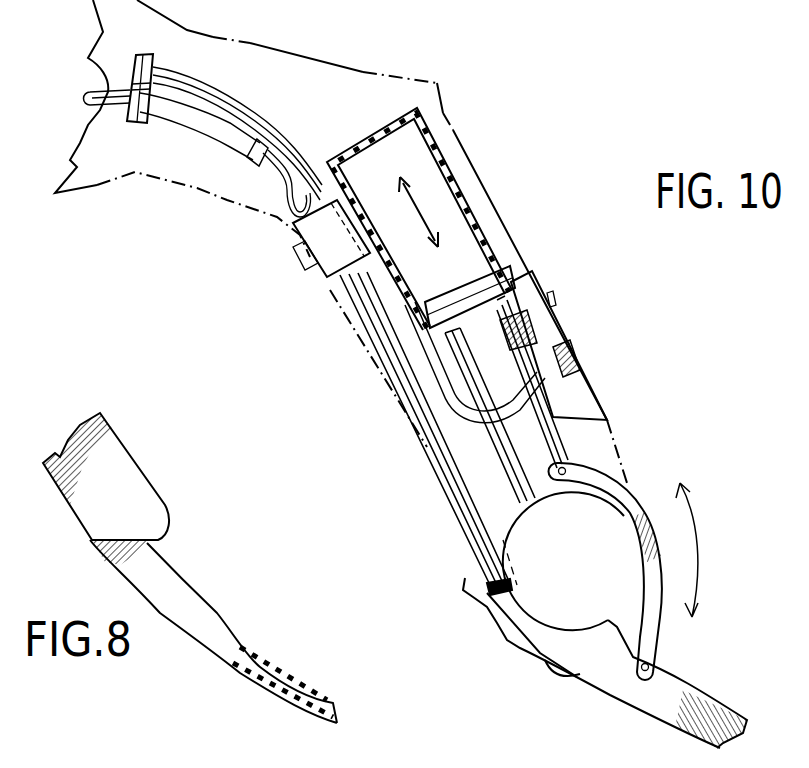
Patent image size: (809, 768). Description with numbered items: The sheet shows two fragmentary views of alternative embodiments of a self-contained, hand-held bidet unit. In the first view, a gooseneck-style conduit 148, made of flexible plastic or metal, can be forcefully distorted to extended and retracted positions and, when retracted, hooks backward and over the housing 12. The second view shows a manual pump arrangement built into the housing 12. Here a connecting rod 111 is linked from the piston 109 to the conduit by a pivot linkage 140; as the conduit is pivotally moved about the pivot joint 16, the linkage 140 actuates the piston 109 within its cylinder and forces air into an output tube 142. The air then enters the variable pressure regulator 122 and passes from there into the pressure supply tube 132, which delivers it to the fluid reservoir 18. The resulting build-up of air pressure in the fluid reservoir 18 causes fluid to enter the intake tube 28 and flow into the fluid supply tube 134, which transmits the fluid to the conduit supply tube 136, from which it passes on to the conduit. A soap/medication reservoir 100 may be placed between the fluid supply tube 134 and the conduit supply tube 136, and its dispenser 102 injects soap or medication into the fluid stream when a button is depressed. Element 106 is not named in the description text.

In FIG. 8, the housing 12 is at (108, 468).
In FIG. 10, the pivot joint 16 is at (605, 663).
In FIG. 10, the fluid reservoir 18 is at (102, 133).
In FIG. 10, the intake tube 28 is at (93, 62).
In FIG. 10, the soap/medication reservoir 100 is at (380, 320).
In FIG. 10, the dispenser 102 is at (312, 258).
In FIG. 10, the housing frame 106 is at (413, 157).
In FIG. 10, the piston 109 is at (460, 275).
In FIG. 10, the connecting rod 111 is at (543, 340).
In FIG. 10, the variable pressure regulator 122 is at (549, 381).
In FIG. 10, the pressure supply tube 132 is at (230, 93).
In FIG. 10, the fluid supply tube 134 is at (265, 176).
In FIG. 10, the conduit supply tube 136 is at (498, 482).
In FIG. 10, the pivot linkage 140 is at (636, 490).
In FIG. 10, the output tube 142 is at (514, 290).
In FIG. 8, the conduit 148 is at (203, 618).